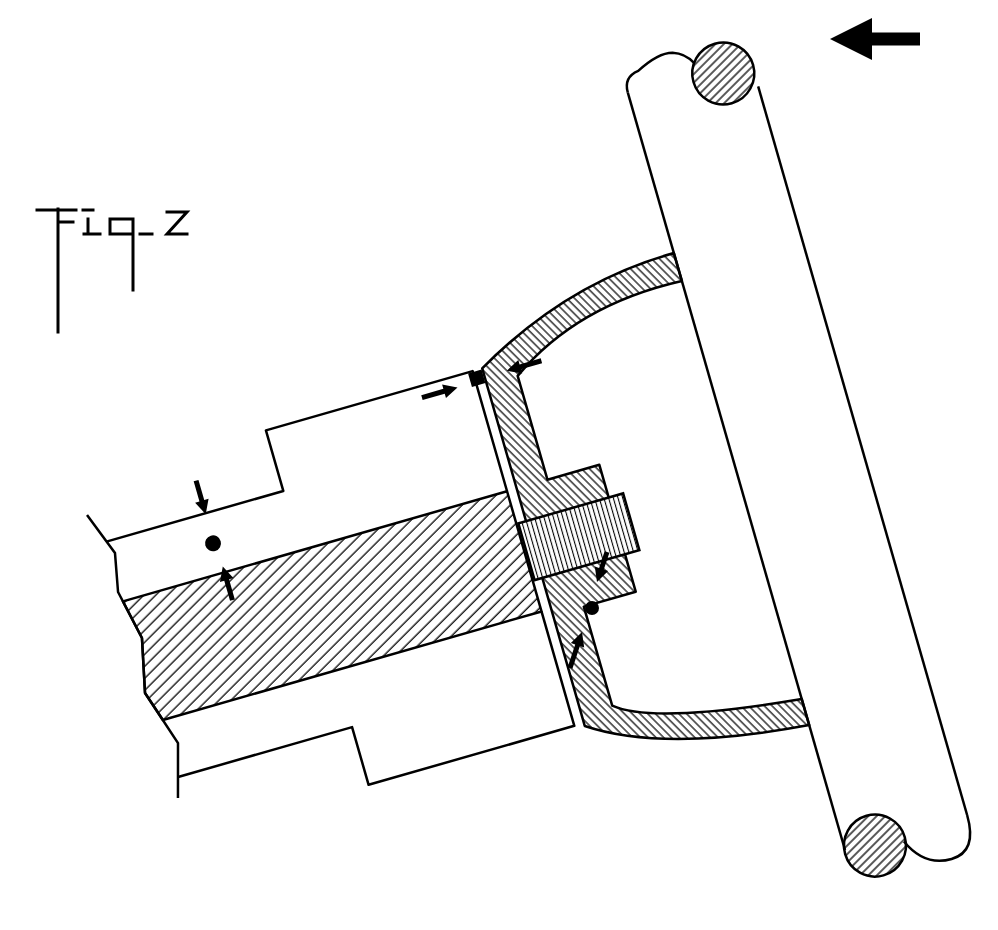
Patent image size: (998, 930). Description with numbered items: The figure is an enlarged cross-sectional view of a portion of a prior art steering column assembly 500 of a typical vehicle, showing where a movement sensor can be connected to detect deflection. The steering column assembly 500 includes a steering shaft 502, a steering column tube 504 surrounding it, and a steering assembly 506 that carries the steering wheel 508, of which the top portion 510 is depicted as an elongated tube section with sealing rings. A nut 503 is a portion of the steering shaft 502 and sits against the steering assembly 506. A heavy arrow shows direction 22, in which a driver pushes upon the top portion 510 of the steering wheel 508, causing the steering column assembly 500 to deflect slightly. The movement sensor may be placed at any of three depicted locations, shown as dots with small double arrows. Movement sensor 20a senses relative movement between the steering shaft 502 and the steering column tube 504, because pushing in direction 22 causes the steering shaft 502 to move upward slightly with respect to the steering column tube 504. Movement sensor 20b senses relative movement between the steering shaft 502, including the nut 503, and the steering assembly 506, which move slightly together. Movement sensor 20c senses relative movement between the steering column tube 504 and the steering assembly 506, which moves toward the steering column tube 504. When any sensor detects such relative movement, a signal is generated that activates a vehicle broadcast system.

The direction 22 is at (883, 46).
The steering column assembly 500 is at (159, 553).
The steering shaft 502 is at (363, 531).
The nut 503 is at (634, 563).
The steering column tube 504 is at (353, 406).
The steering assembly 506 is at (573, 297).
The steering wheel 508 is at (840, 377).
The top portion 510 is at (630, 83).
The movement sensor 20a is at (222, 547).
The movement sensor 20b is at (598, 612).
The movement sensor 20c is at (468, 372).